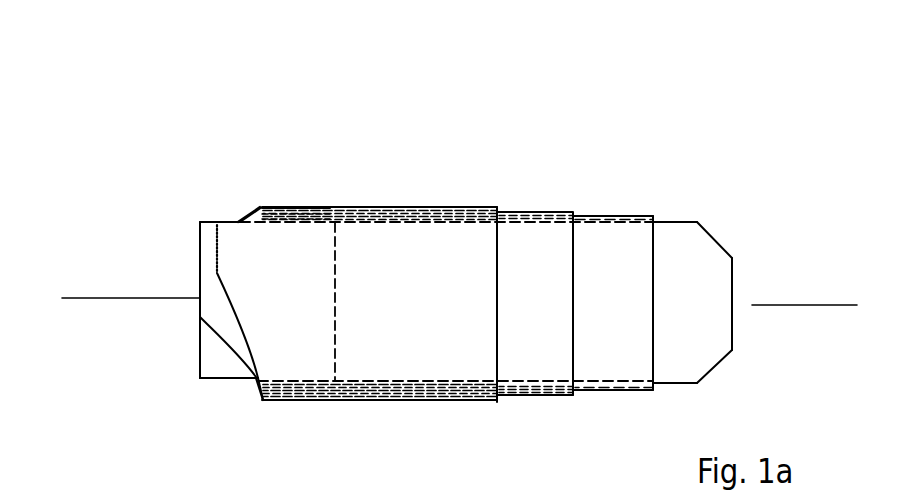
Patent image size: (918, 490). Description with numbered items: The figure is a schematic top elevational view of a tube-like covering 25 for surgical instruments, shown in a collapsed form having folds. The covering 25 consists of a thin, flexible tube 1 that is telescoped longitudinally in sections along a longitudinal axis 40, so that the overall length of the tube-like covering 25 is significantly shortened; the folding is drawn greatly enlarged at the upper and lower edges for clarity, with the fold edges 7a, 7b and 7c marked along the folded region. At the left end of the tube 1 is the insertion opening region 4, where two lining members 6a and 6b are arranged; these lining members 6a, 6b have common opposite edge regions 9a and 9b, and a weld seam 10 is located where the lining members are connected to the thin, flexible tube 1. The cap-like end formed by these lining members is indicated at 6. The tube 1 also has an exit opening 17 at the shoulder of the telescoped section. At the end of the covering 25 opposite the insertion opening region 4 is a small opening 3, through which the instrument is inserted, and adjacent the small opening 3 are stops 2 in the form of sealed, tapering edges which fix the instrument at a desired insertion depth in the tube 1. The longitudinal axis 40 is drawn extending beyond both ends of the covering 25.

The thin, flexible tube 1 is at (537, 241).
The stops 2 is at (719, 247).
The small opening 3 is at (733, 303).
The insertion opening region 4 is at (200, 338).
The cap 6 is at (200, 299).
The lining member 6a is at (208, 367).
The lining member 6b is at (215, 304).
The fold edge 7a is at (259, 206).
The fold edge 7b is at (291, 212).
The fold edge 7c is at (319, 215).
The common opposite edge region 9a is at (240, 220).
The common opposite edge region 9b is at (251, 388).
The weld seam 10 is at (213, 381).
The exit opening 17 is at (498, 347).
The tube-like covering 25 is at (378, 190).
The longitudinal axis 40 is at (95, 297).